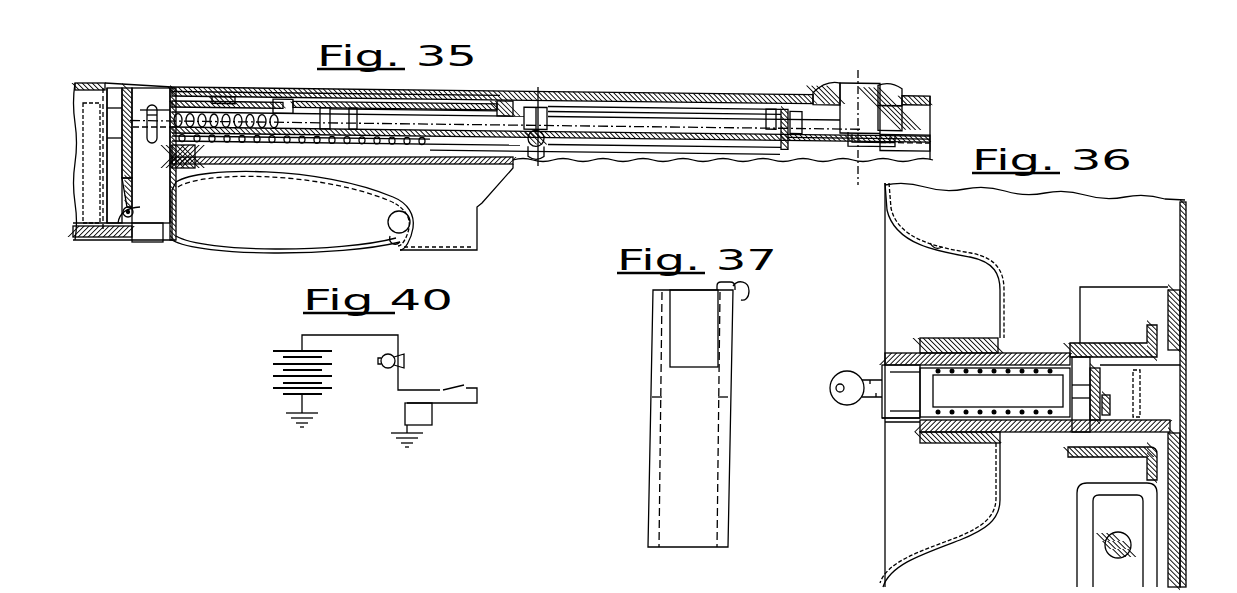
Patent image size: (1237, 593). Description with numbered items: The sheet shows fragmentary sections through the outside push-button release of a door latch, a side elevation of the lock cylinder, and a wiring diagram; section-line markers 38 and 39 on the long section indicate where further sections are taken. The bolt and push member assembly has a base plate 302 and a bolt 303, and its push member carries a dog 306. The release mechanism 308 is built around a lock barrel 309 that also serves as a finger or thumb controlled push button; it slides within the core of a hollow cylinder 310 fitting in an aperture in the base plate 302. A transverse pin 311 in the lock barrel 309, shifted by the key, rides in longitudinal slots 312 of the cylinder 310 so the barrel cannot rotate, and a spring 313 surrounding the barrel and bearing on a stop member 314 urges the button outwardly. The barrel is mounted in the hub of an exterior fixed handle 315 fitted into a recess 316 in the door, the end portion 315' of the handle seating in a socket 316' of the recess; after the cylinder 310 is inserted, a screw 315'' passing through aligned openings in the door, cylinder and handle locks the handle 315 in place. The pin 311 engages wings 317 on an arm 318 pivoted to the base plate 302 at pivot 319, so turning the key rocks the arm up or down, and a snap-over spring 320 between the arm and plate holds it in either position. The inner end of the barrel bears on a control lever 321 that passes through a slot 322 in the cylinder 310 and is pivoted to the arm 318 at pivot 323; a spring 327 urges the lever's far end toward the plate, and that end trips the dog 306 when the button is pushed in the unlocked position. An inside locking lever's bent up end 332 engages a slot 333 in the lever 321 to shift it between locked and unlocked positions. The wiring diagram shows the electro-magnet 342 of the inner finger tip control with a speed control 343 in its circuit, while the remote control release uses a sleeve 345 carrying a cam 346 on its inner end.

In FIG. 35, the base plate 302 is at (632, 100).
In FIG. 36, the base plate 302 is at (1181, 330).
In FIG. 36, the bolt 303 is at (1097, 518).
In FIG. 35, the dog 306 is at (893, 145).
In FIG. 36, the release mechanism 308 is at (1012, 353).
In FIG. 35, the lock barrel 309 is at (140, 238).
In FIG. 36, the lock barrel 309 is at (900, 421).
In FIG. 35, the hollow cylinder 310 is at (141, 92).
In FIG. 37, the hollow cylinder 310 is at (672, 453).
In FIG. 36, the hollow cylinder 310 is at (920, 352).
In FIG. 35, the transverse pin 311 is at (152, 141).
In FIG. 36, the transverse pin 311 is at (1087, 360).
In FIG. 35, the longitudinal slots 312 is at (160, 93).
In FIG. 37, the longitudinal slots 312 is at (655, 318).
In FIG. 36, the longitudinal slots 312 is at (1138, 362).
In FIG. 36, the spring 313 is at (1002, 428).
In FIG. 36, the stop member 314 is at (1047, 428).
In FIG. 35, the exterior fixed handle 315 is at (286, 229).
In FIG. 36, the exterior fixed handle 315 is at (959, 335).
In FIG. 35, the end portion 315' is at (395, 253).
In FIG. 35, the screw 315'' is at (121, 241).
In FIG. 35, the recess 316 is at (415, 219).
In FIG. 36, the recess 316 is at (942, 385).
In FIG. 35, the socket 316' is at (423, 222).
In FIG. 36, the wings 317 is at (1103, 347).
In FIG. 35, the arm 318 is at (275, 112).
In FIG. 35, the pivot 319 is at (507, 102).
In FIG. 35, the snap-over spring 320 is at (230, 98).
In FIG. 35, the control lever 321 is at (463, 125).
In FIG. 36, the control lever 321 is at (1106, 395).
In FIG. 37, the slot 322 is at (749, 300).
In FIG. 35, the pivot 323 is at (548, 139).
In FIG. 35, the spring 327 is at (524, 140).
In FIG. 35, the bent up end 332 is at (785, 150).
In FIG. 35, the slot 333 is at (782, 138).
In FIG. 40, the electro-magnet 342 is at (432, 412).
In FIG. 40, the speed control 343 is at (404, 358).
In FIG. 35, the sleeve 345 is at (870, 84).
In FIG. 35, the cam 346 is at (857, 136).
In FIG. 35, the section line 38- 38 is at (537, 127).
In FIG. 35, the section line 39- 39 is at (853, 72).